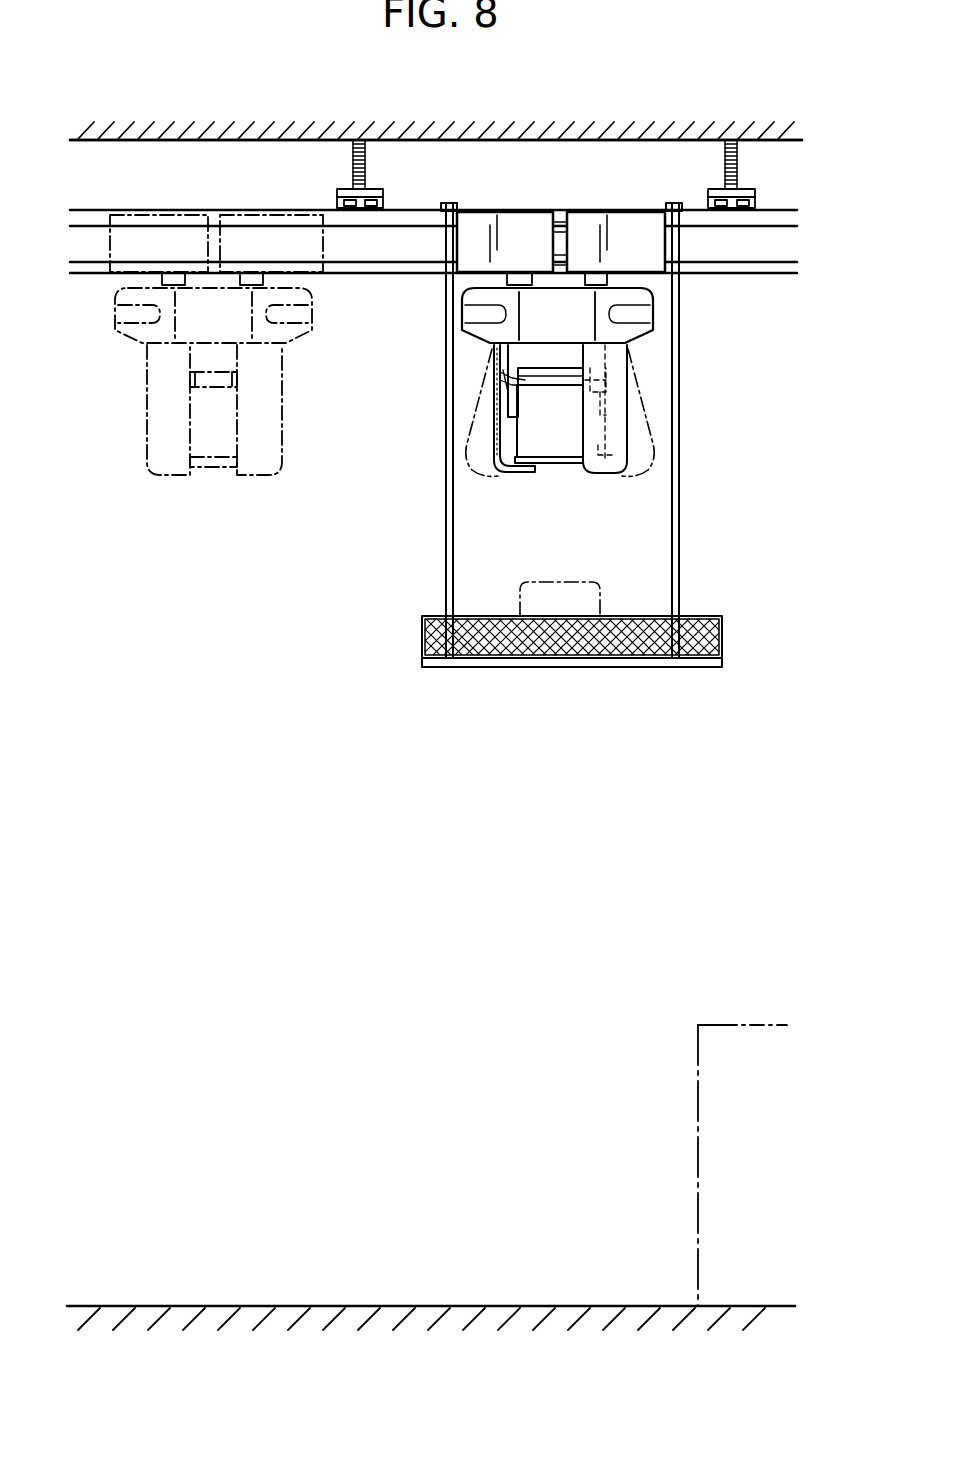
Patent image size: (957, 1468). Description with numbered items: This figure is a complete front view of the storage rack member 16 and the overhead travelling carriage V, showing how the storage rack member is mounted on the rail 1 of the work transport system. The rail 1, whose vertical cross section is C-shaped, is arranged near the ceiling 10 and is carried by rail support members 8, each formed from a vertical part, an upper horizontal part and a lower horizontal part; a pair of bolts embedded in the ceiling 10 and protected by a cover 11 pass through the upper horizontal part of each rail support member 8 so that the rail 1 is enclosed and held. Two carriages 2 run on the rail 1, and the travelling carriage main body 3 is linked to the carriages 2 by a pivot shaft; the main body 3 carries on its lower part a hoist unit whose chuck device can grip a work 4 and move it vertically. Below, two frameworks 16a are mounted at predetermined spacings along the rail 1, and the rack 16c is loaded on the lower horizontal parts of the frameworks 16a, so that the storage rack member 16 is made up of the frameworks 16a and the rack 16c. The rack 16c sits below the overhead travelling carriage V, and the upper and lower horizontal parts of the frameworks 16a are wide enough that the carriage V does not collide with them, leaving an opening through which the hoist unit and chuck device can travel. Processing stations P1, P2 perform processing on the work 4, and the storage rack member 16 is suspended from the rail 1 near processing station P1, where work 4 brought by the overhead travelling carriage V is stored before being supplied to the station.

The rail 1 is at (768, 273).
The carriages 2 is at (522, 220).
The travelling carriage main body 3 is at (660, 310).
The work 4 is at (560, 437).
The rail support member 8 is at (341, 192).
The ceiling 10 is at (104, 141).
The cover 11 is at (366, 158).
The storage rack member 16 is at (569, 460).
The framework 16a is at (446, 547).
The rack 16c is at (628, 658).
The overhead travelling carriage V is at (520, 483).
The processing station P1 is at (747, 1116).
The processing station P2 is at (722, 1030).